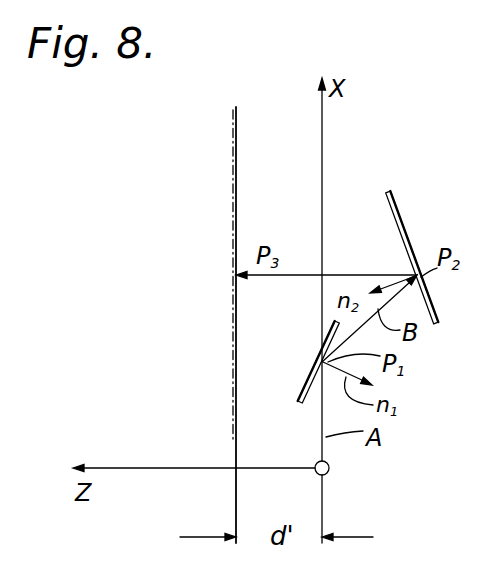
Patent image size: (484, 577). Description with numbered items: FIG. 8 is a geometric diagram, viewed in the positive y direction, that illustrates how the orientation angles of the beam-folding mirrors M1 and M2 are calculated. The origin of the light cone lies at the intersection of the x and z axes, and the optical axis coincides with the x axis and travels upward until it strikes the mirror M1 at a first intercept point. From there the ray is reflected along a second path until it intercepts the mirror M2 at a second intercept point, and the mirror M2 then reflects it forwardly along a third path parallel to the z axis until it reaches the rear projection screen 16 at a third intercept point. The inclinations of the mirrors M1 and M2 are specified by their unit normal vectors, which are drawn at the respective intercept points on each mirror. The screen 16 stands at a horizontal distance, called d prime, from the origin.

The rear projection screen 16 is at (236, 162).
The mirror M1 is at (303, 388).
The mirror M2 is at (402, 213).